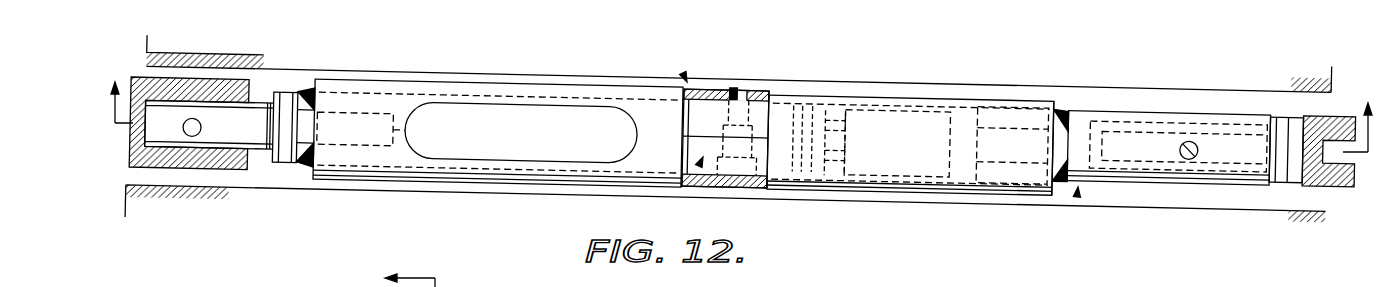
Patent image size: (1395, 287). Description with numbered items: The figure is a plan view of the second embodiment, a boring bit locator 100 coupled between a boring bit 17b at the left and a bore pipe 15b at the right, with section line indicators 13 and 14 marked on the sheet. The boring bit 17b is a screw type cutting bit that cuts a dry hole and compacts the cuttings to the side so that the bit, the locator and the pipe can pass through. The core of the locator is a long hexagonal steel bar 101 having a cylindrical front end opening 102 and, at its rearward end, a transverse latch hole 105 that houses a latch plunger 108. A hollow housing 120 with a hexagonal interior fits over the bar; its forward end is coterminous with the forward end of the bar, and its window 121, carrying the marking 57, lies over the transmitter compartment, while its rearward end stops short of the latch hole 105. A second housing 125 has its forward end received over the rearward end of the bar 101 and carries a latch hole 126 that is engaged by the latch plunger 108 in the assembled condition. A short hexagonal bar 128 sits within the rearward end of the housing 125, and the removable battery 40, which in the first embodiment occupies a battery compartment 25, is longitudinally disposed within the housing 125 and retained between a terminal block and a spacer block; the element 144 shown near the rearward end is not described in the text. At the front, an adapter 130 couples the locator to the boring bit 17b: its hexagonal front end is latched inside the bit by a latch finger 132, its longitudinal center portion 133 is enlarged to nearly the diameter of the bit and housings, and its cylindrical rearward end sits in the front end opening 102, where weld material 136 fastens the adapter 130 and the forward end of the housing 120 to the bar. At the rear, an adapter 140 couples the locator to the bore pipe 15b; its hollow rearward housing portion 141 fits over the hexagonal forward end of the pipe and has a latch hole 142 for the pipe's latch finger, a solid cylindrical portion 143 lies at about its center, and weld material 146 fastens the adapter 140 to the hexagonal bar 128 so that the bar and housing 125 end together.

The section line 13- 13 is at (743, 100).
The section line 14- 14 is at (430, 277).
The bore pipe 15b is at (1347, 188).
The boring bit 17b is at (172, 159).
The battery compartment 25 is at (896, 116).
The removable battery 40 is at (903, 165).
The indicator 57 is at (510, 130).
The boring bit locator 100 is at (686, 76).
The hexagonal steel bar 101 is at (699, 165).
The cylindrical front end opening 102 is at (360, 117).
The transverse latch hole 105 is at (742, 186).
The latch plunger 108 is at (742, 97).
The hollow housing 120 is at (483, 88).
The window 121 is at (617, 110).
The housing 125 is at (947, 98).
The latch hole 126 is at (737, 88).
The short hexagonal bar 128 is at (1005, 110).
The adapter 130 is at (285, 92).
The latch finger 132 is at (192, 117).
The longitudinal center portion 133 is at (277, 160).
The weld material 136 is at (308, 157).
The adapter 140 is at (1077, 195).
The hollow rearward housing portion 141 is at (1262, 185).
The latch hole 142 is at (1187, 143).
The solid cylindrical portion 143 is at (1150, 183).
The sleeve 144 is at (1018, 155).
The weld material 146 is at (1057, 110).